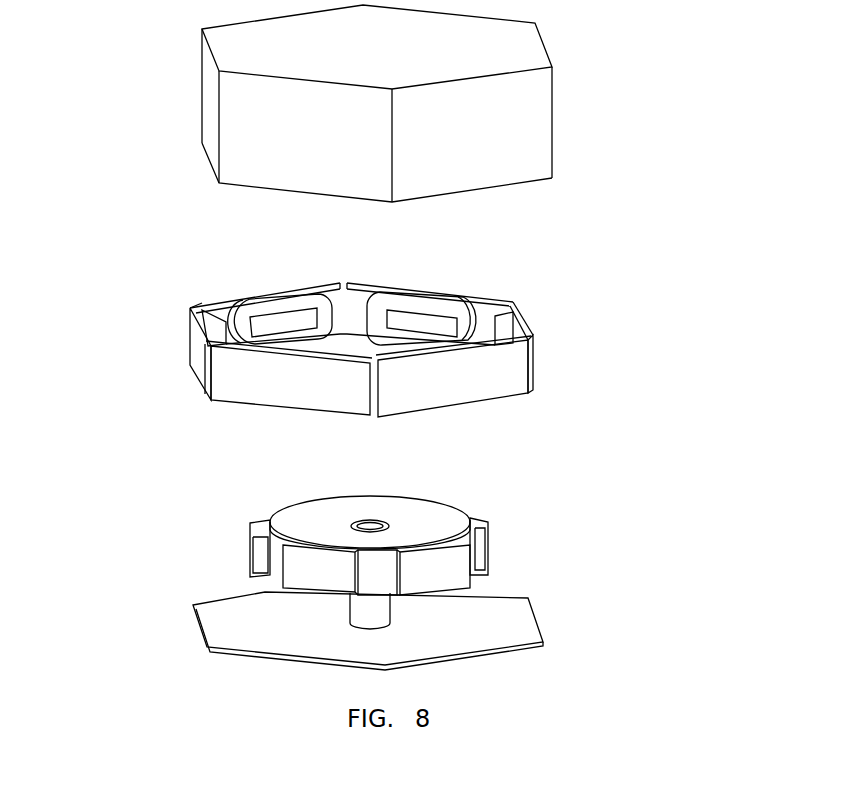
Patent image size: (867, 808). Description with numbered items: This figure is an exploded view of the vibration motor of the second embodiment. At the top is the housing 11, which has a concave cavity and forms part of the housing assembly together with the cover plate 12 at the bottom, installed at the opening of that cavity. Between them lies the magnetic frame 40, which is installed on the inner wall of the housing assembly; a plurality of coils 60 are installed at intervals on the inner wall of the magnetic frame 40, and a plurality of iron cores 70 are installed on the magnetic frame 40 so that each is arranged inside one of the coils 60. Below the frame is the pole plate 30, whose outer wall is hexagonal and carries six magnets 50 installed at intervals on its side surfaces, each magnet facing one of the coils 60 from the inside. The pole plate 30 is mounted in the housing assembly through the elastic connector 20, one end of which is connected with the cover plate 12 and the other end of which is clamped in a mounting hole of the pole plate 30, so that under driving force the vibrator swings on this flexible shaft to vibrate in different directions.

The housing 11 is at (522, 137).
The cover plate 12 is at (522, 632).
The elastic connector 20 is at (370, 612).
The pole plate 30 is at (300, 525).
The magnetic frame 40 is at (492, 372).
The magnets 50 is at (447, 570).
The coils 60 is at (423, 310).
The iron cores 70 is at (292, 325).